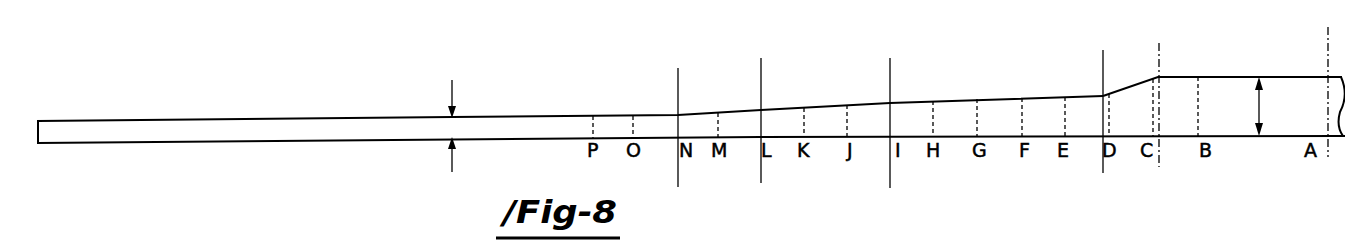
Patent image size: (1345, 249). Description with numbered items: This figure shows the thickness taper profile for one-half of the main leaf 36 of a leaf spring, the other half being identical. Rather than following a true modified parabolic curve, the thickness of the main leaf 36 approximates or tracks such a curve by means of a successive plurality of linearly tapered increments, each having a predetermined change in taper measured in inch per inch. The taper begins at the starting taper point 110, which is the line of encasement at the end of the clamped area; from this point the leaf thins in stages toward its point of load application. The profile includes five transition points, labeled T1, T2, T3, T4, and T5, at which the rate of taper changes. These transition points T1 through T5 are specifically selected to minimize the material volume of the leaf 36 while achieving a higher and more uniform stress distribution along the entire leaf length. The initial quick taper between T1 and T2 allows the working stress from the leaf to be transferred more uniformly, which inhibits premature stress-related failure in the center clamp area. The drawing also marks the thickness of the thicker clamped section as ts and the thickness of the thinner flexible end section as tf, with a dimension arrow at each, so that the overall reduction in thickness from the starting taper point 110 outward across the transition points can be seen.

The first leaf 36 is at (138, 117).
The starting taper point 110 is at (1160, 63).
The flexible portion thickness tf is at (452, 88).
The stiff portion thickness ts is at (1262, 108).
The first transition point T1 is at (1151, 93).
The second transition point T2 is at (1103, 98).
The third transition point T3 is at (890, 105).
The fourth transition point T4 is at (761, 103).
The fifth transition point T5 is at (678, 106).